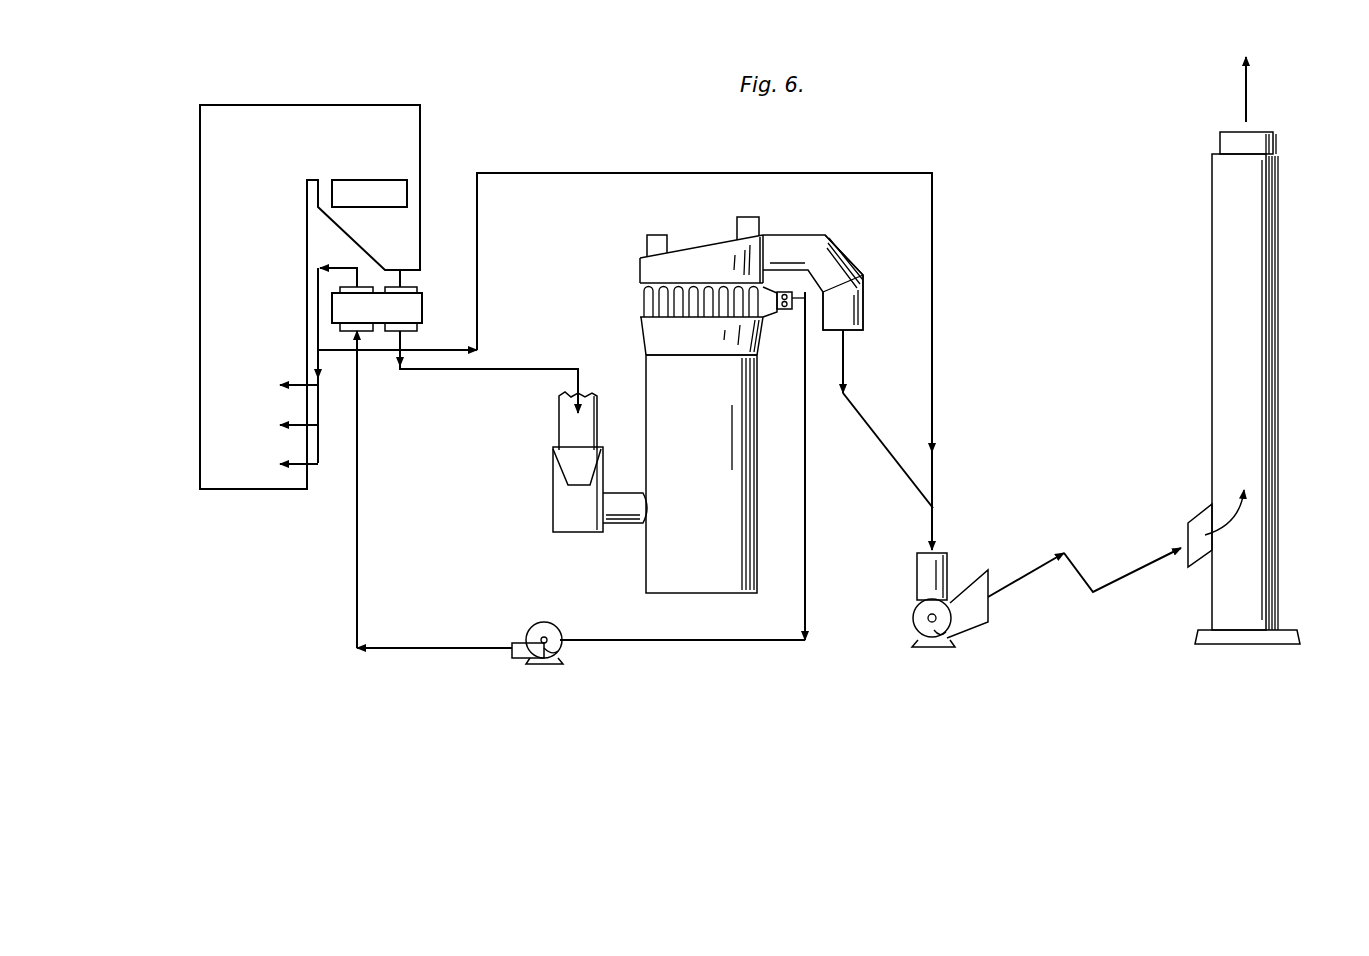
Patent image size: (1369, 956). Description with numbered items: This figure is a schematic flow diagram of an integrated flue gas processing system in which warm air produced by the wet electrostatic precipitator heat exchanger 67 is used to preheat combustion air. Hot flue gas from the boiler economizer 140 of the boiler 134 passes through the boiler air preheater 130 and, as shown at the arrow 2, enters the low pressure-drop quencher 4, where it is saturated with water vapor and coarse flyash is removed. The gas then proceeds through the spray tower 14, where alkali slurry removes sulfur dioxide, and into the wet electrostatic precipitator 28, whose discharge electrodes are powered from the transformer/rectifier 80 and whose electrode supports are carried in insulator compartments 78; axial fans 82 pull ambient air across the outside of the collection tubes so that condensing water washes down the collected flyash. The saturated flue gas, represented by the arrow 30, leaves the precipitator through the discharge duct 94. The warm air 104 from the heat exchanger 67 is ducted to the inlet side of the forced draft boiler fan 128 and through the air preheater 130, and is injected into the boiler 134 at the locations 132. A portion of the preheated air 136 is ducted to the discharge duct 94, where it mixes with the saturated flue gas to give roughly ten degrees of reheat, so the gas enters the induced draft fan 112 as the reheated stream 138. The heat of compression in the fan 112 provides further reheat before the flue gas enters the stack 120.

The hot flue gas 2 is at (482, 377).
The quencher 4 is at (560, 415).
The spray tower 14 is at (757, 570).
The wet electrostatic precipitator 28 is at (640, 298).
The saturated flue gas 30 is at (775, 247).
The cross flow heat exchanger 67 is at (770, 315).
The insulator compartments 78 is at (752, 215).
The transformer/rectifier 80 is at (657, 232).
The axial fans 82 is at (786, 309).
The discharge duct 94 is at (840, 248).
The warm air 104 is at (808, 490).
The induced draft fan 112 is at (940, 640).
The stack 120 is at (1283, 302).
The forced draft boiler fan 128 is at (545, 660).
The boiler air preheater 130 is at (423, 305).
The injection locations 132 is at (320, 448).
The boiler 134 is at (210, 453).
The preheated air portion 136 is at (478, 240).
The fan inlet flue gas 138 is at (938, 515).
The boiler economizer 140 is at (400, 187).